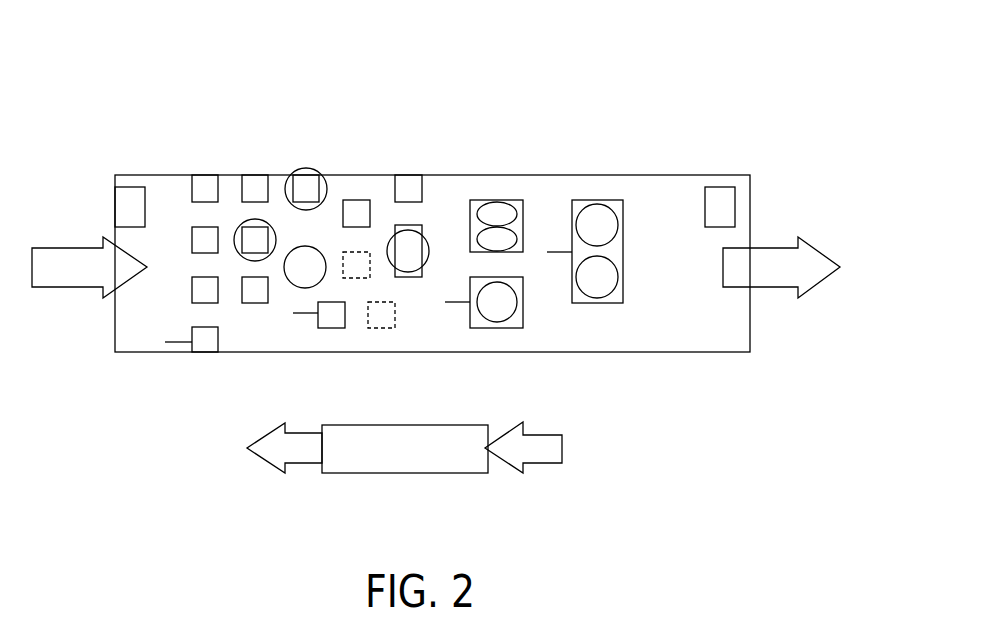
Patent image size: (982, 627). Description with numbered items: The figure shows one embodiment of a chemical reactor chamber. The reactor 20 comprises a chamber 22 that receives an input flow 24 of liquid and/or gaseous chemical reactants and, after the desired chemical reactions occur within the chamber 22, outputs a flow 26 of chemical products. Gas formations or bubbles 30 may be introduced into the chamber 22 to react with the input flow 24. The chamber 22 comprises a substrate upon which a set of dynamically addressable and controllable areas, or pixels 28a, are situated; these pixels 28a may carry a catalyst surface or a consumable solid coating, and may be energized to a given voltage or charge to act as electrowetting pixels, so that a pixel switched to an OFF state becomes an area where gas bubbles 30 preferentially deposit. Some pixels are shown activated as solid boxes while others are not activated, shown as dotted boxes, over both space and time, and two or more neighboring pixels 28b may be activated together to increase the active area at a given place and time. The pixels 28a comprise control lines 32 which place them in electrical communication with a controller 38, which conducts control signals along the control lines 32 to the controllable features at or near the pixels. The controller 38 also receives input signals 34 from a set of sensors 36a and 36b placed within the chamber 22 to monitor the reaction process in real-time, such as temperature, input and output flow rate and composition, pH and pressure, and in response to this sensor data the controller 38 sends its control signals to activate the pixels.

The reactor 20 is at (536, 100).
The chamber 22 is at (145, 175).
The input flow 24 is at (75, 290).
The output flow 26 is at (765, 288).
The pixels 28a is at (205, 352).
The neighboring pixels 28b is at (497, 328).
The gas bubbles 30 is at (255, 217).
The control lines 32 is at (168, 342).
The input signals 34 is at (115, 221).
The sensor 36a is at (125, 198).
The sensor 36b is at (722, 196).
The controller 38 is at (405, 473).